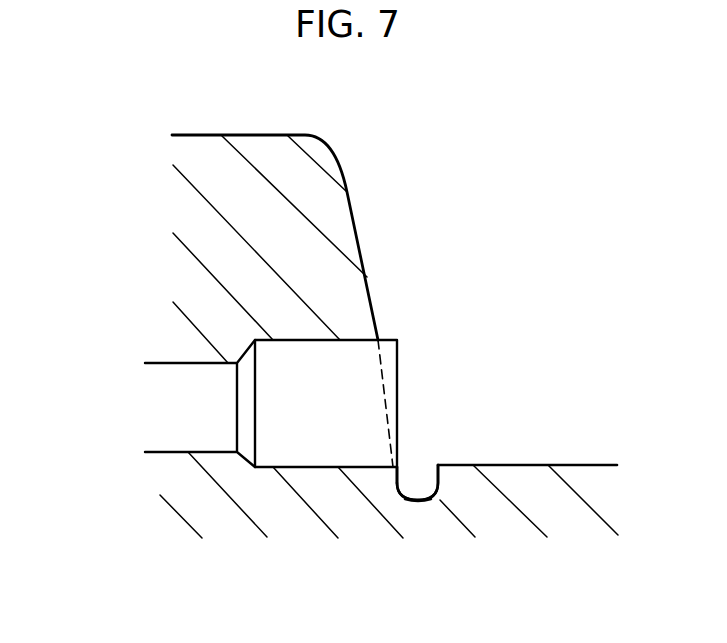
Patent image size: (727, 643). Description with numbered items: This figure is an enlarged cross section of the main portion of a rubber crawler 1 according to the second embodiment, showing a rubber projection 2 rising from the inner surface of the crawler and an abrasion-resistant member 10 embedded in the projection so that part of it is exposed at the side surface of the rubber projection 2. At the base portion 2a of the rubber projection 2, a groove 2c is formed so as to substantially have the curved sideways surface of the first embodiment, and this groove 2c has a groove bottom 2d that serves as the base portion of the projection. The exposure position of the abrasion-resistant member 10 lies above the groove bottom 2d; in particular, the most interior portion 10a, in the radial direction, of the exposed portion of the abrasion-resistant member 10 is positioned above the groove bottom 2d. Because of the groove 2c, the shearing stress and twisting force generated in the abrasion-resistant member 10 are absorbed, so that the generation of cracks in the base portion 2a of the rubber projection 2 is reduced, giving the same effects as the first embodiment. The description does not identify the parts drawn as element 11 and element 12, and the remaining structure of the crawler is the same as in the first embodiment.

The rubber crawler 1 is at (587, 487).
The rubber projection 2 is at (283, 163).
The base portion 2a is at (397, 496).
The groove 2c is at (418, 488).
The groove bottom 2d is at (420, 503).
The abrasion-resistant member 10 is at (400, 332).
The most interior portion 10a is at (408, 455).
The shaft 11 is at (165, 435).
The contact surface 12 is at (372, 388).